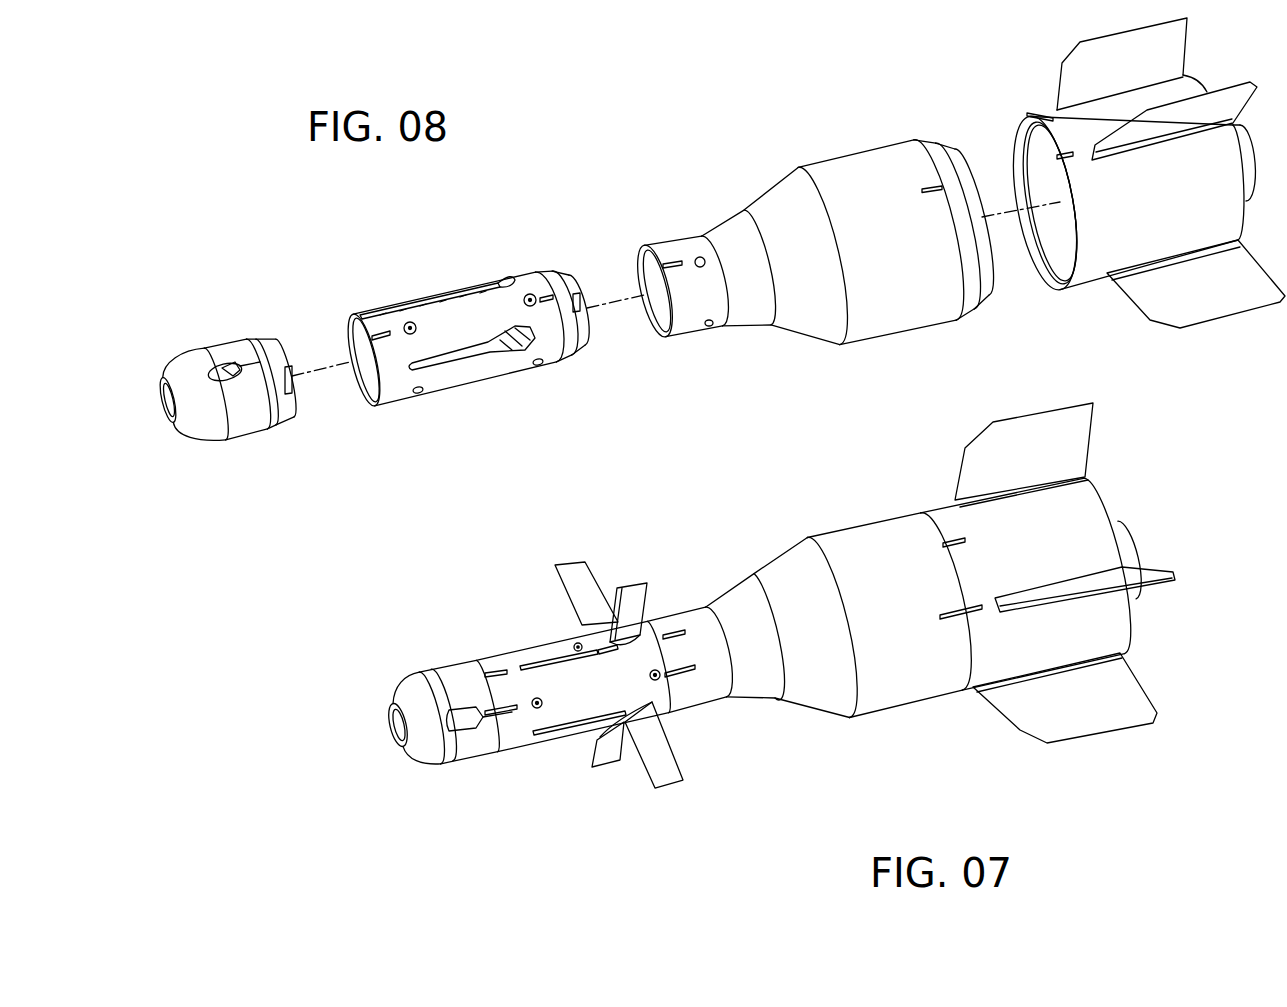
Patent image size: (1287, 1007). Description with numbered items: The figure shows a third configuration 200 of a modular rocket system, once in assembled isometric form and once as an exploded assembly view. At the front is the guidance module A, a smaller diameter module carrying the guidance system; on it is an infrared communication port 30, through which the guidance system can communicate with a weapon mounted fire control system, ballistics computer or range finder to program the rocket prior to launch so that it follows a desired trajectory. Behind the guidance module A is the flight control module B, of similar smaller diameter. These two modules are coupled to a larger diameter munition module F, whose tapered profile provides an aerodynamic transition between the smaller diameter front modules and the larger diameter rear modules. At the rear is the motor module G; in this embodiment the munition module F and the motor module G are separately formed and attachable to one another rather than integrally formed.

In FIG. 7, the third configuration 200 is at (380, 574).
In FIG. 8, the third configuration 200 is at (599, 169).
In FIG. 7, the guidance module A is at (420, 770).
In FIG. 8, the guidance module A is at (232, 367).
In FIG. 7, the flight control module B is at (543, 750).
In FIG. 8, the flight control module B is at (435, 287).
In FIG. 7, the munition module F is at (800, 697).
In FIG. 8, the munition module F is at (842, 183).
In FIG. 7, the motor module G is at (983, 663).
In FIG. 8, the motor module G is at (1082, 120).
In FIG. 8, the infrared communication port 30 is at (228, 378).